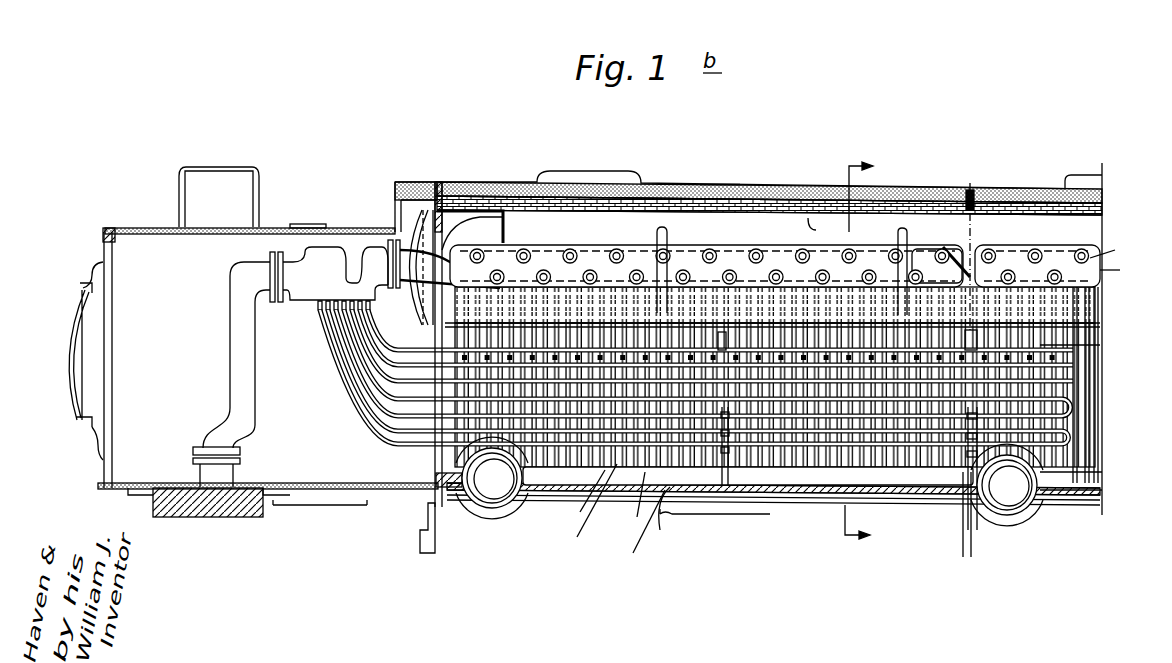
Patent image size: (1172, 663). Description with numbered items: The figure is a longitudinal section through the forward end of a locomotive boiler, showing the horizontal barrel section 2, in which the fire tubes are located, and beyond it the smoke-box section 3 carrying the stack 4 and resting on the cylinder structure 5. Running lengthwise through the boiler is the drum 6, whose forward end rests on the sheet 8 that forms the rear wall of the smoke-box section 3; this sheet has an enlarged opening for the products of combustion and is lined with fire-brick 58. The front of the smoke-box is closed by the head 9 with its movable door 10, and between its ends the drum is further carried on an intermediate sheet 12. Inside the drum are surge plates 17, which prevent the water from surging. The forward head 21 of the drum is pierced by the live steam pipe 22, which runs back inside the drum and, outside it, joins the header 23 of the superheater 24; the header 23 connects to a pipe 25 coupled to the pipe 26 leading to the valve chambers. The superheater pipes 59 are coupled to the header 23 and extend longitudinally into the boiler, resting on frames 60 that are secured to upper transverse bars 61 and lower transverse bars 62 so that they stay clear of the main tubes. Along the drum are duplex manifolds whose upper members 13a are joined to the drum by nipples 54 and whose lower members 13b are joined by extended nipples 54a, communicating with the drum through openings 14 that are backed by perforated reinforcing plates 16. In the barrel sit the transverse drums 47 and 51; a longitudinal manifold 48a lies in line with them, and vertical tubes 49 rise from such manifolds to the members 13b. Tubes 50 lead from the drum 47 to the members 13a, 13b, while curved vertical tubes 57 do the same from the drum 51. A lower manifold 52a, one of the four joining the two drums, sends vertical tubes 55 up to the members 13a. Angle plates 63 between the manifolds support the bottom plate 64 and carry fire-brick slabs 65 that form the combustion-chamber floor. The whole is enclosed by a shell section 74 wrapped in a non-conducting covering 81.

The horizontal barrel section 2 is at (715, 521).
The smoke-box section 3 is at (320, 514).
The stack 4 is at (219, 197).
The cylinder structure 5 is at (216, 510).
The drum 6 is at (848, 352).
The sheet 8 is at (438, 183).
The head 9 is at (101, 252).
The movable door 10 is at (72, 322).
The intermediate sheet 12 is at (970, 188).
The upper manifold member 13a is at (922, 253).
The lower manifold member 13b is at (714, 270).
The openings 14 is at (988, 252).
The reinforcing plates 16 is at (1120, 270).
The surge plates 17 is at (668, 248).
The head 21 is at (408, 220).
The live steam pipe 22 is at (593, 253).
The header 23 is at (335, 272).
The superheater 24 is at (315, 315).
The pipe 25 is at (228, 342).
The pipe 26 is at (195, 463).
The drum 47 is at (1010, 510).
The longitudinal manifold 48a is at (1088, 492).
The vertical tubes 49 is at (1098, 385).
The tubes 50 is at (1082, 339).
The drum 51 is at (490, 503).
The lower manifold 52a is at (622, 502).
The nipples 54 is at (660, 250).
The extended nipples 54a is at (542, 270).
The vertical tubes 55 is at (579, 498).
The curved vertical tubes 57 is at (432, 333).
The fire-brick 58 is at (437, 476).
The superheater pipes 59 is at (372, 435).
The frames 60 is at (968, 458).
The upper transverse bars 61 is at (725, 332).
The lower transverse bars 62 is at (710, 478).
The angle plates 63 is at (640, 530).
The bottom plate 64 is at (592, 510).
The fire-brick slabs 65 is at (664, 517).
The casing section 74 is at (767, 194).
The non-conducting covering 81 is at (720, 191).